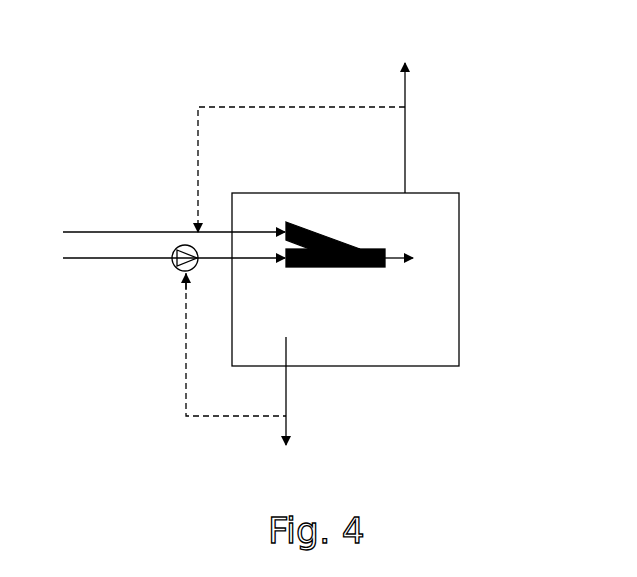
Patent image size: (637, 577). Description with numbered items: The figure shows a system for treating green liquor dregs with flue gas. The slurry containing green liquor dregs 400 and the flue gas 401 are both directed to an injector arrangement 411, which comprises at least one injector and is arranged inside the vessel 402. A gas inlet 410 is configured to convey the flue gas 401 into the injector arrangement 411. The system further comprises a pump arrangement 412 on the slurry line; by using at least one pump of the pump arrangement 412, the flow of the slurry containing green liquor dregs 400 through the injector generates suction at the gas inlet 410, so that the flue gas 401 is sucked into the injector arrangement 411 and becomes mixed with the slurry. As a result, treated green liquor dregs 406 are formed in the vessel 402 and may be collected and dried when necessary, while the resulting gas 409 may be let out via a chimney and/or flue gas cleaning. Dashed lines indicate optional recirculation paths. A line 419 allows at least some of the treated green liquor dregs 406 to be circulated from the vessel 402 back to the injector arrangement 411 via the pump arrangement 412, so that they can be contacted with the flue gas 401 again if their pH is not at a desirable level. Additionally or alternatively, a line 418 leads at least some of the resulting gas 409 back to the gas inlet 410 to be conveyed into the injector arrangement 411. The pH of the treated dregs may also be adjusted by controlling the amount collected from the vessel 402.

The slurry containing green liquor dregs 400 is at (95, 258).
The flue gas 401 is at (135, 230).
The vessel 402 is at (459, 320).
The treated green liquor dregs 406 is at (286, 388).
The resulting gas 409 is at (405, 157).
The gas inlet 410 is at (287, 222).
The injector arrangement 411 is at (370, 267).
The pump arrangement 412 is at (178, 272).
The line for recirculating resulting gas 418 is at (234, 107).
The line for recirculating treated green liquor dregs 419 is at (186, 386).